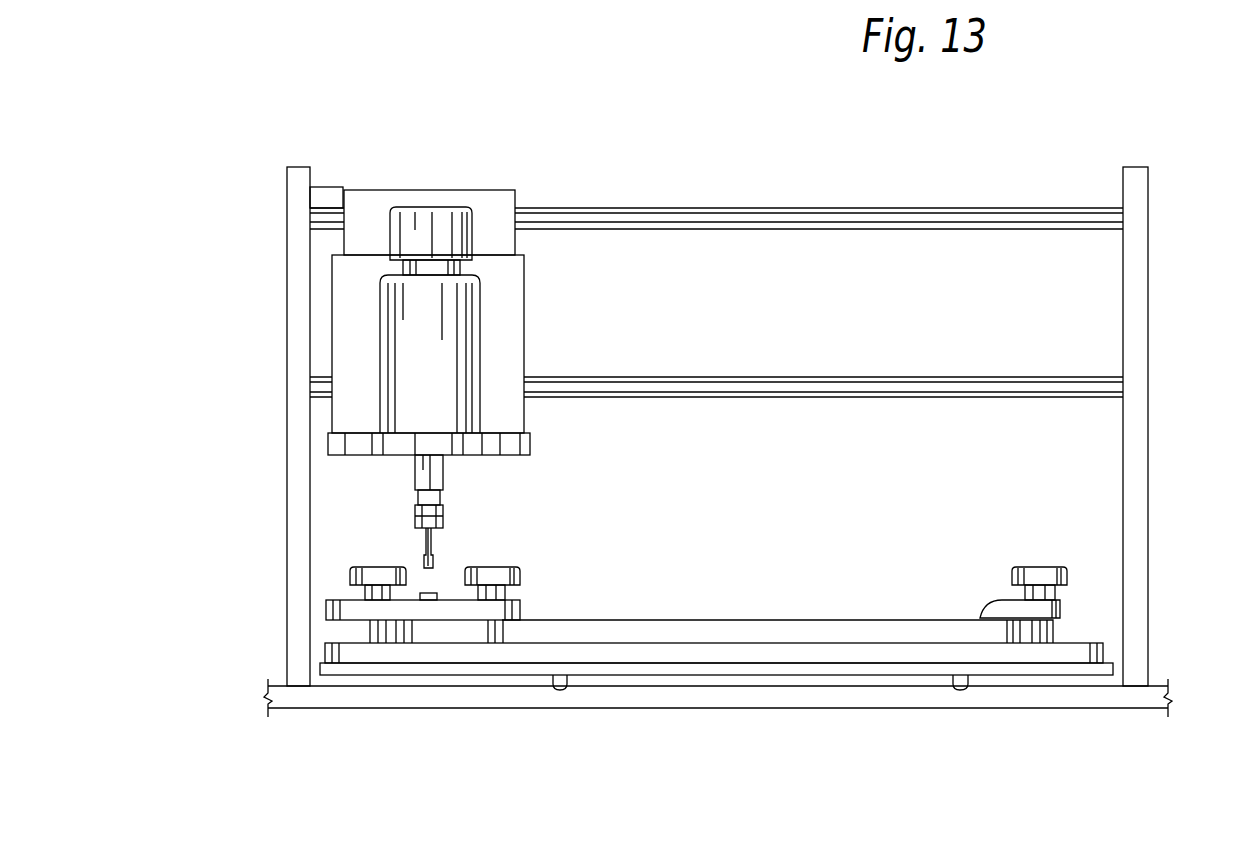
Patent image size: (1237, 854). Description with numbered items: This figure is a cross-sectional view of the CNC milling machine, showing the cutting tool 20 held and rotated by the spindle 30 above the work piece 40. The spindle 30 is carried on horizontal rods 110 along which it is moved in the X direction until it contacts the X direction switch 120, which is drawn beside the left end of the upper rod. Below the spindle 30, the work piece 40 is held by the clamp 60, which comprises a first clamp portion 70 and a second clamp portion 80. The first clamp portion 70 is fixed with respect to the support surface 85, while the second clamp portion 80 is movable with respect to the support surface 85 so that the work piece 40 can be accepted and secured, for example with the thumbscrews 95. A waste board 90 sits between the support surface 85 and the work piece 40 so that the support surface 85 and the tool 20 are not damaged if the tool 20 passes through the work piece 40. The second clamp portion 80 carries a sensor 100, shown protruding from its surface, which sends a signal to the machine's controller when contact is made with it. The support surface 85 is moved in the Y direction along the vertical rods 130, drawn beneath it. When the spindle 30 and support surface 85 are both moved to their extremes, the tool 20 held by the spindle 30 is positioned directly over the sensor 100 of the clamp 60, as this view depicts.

The tool 20 is at (432, 557).
The spindle 30 is at (463, 322).
The work piece 40 is at (783, 622).
The clamp 60 is at (342, 628).
The first clamp portion 70 is at (428, 657).
The second clamp portion 80 is at (517, 613).
The support surface 85 is at (1083, 668).
The waste board 90 is at (1103, 655).
The thumbscrews 95 is at (360, 567).
The sensor 100 is at (430, 590).
The horizontal rods 110 is at (803, 383).
The switch 120 is at (332, 187).
The vertical rods 130 is at (562, 690).